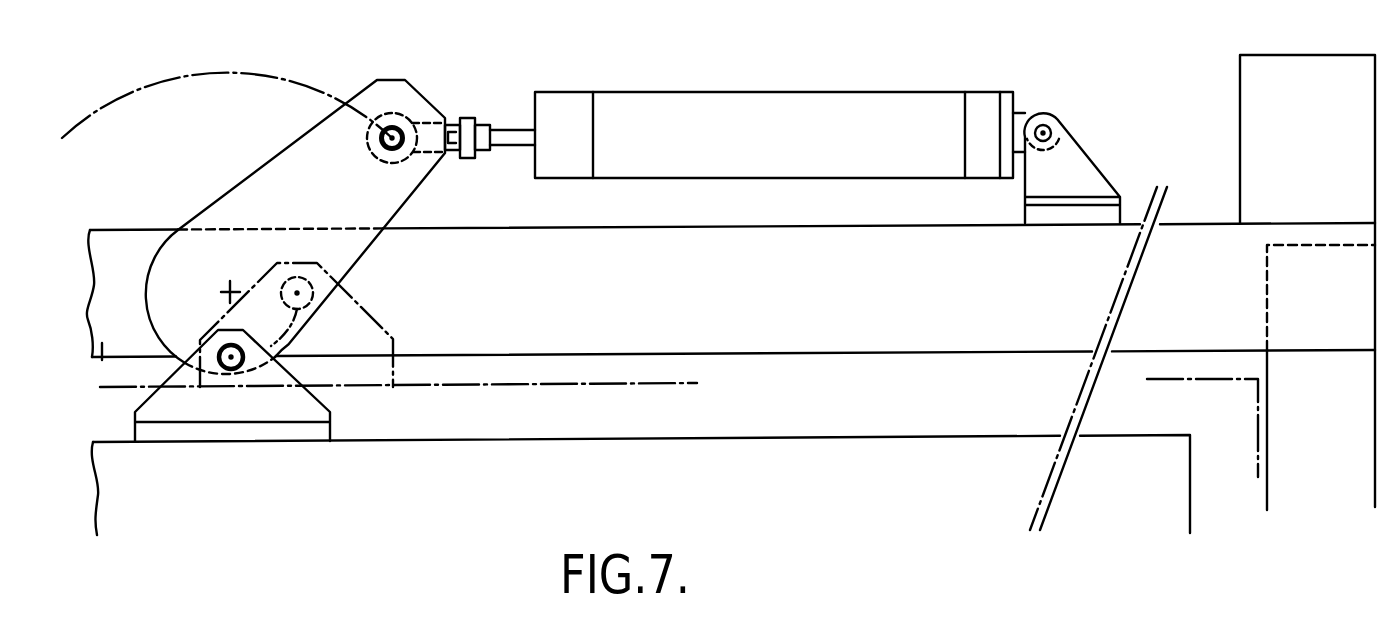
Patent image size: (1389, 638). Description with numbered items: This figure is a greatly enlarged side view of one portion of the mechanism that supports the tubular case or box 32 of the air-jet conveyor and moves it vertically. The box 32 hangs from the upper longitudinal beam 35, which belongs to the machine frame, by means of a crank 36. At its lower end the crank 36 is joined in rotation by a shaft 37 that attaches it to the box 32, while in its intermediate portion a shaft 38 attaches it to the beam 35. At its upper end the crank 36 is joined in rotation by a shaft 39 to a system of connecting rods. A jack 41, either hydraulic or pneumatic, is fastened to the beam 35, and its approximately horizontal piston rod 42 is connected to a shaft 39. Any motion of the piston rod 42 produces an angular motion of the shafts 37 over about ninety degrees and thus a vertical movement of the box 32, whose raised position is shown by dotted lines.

The tubular case or box 32 is at (418, 448).
The upper longitudinal beam 35 is at (859, 342).
The crank 36 is at (263, 187).
The shaft 37 is at (218, 353).
The shaft 38 is at (230, 292).
The shaft 39 is at (395, 130).
The jack 41 is at (779, 100).
The piston rod 42 is at (503, 130).